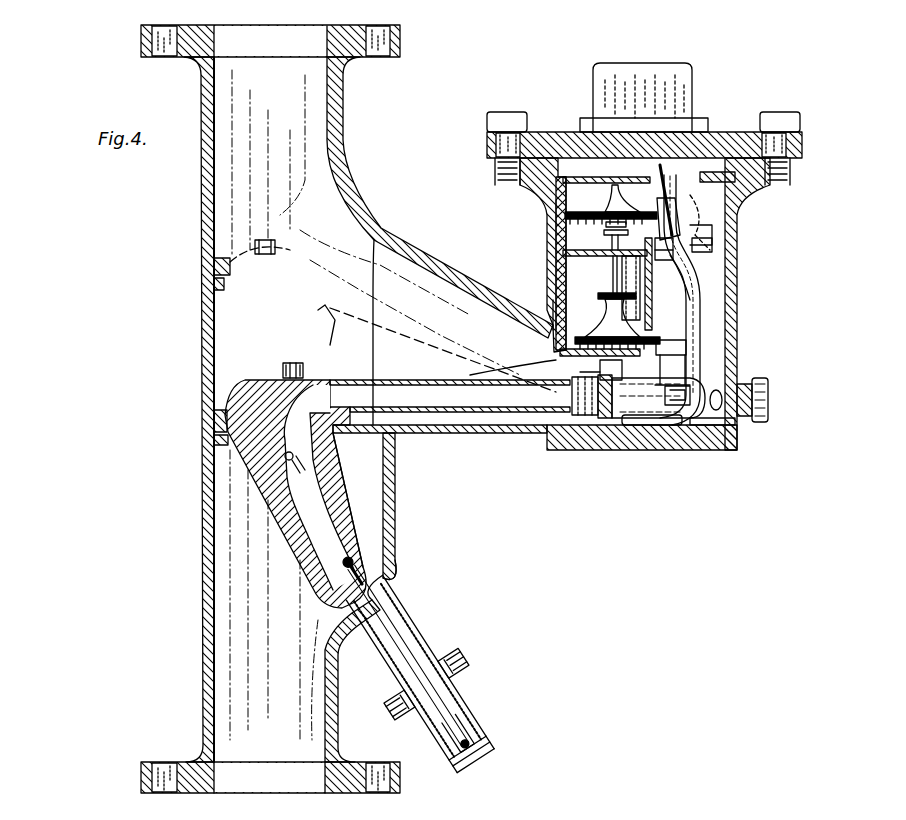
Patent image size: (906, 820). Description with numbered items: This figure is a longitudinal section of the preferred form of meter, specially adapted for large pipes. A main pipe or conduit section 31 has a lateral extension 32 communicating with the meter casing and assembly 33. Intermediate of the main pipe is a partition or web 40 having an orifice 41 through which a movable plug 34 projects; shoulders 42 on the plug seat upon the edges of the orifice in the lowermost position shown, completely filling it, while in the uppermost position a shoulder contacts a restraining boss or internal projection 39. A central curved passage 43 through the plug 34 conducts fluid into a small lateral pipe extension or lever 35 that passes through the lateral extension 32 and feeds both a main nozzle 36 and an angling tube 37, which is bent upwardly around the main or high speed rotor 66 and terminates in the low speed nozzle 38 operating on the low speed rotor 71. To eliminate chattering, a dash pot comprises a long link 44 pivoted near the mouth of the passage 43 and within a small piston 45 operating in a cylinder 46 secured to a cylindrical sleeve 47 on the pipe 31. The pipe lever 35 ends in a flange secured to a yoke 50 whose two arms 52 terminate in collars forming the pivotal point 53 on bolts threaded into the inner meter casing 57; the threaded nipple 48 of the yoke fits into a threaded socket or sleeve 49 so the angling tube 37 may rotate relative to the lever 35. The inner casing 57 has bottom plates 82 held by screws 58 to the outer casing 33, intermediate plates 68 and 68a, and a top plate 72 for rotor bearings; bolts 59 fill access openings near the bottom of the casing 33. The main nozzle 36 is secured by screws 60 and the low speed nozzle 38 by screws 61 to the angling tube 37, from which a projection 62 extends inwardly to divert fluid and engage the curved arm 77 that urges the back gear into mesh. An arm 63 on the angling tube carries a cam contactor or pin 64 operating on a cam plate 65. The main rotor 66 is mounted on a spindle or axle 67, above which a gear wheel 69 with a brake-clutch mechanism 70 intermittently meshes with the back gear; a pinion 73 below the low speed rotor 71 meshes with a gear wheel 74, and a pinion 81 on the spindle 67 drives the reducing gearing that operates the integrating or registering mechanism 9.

The main pipe or conduit section 31 is at (339, 115).
The lateral extension 32 is at (420, 262).
The meter casing and assembly 33 is at (781, 451).
The movable plug 34 is at (276, 528).
The lateral pipe extension or lever 35 is at (422, 340).
The main nozzle 36 is at (686, 365).
The angling tube 37 is at (700, 300).
The nozzle 38 is at (705, 240).
The restraining boss or internal projection 39 is at (214, 265).
The partition or web 40 is at (213, 448).
The orifice 41 is at (333, 435).
The shoulders 42 is at (214, 289).
The central curved passage 43 is at (320, 520).
The long link 44 is at (385, 568).
The small piston 45 is at (485, 732).
The cylinder 46 is at (465, 692).
The cylindrical sleeve 47 is at (428, 640).
The central projecting portion or nipple 48 is at (608, 420).
The threaded socket or sleeve 49 is at (640, 420).
The yoke 50 is at (596, 420).
The arms 52 is at (598, 384).
The pivotal point; collar 53 is at (686, 347).
The inner meter casing 57 is at (556, 274).
The screws 58 is at (722, 448).
The bolts 59 is at (770, 400).
The screws 60 is at (678, 393).
The screws 61 is at (680, 250).
The projection 62 is at (656, 300).
The arm 63 is at (676, 215).
The cam contactor or pin 64 is at (660, 168).
The cam plate 65 is at (738, 208).
The main or high speed rotor 66 is at (560, 348).
The spindle or axle 67 is at (622, 285).
The intermediate plate or web 68 is at (556, 348).
The intermediate plate or web 68a is at (548, 256).
The gear wheel 69 is at (598, 297).
The brake-clutch mechanism 70 is at (606, 305).
The low speed rotor 71 is at (548, 215).
The top plate 72 is at (580, 165).
The pinion 73 is at (606, 234).
The gear wheel 74 is at (606, 225).
The curved projection or arm 77 is at (684, 270).
The pinion 81 is at (613, 266).
The bottom portions or plates 82 is at (684, 424).
The integrating or registering mechanism 9 is at (566, 92).